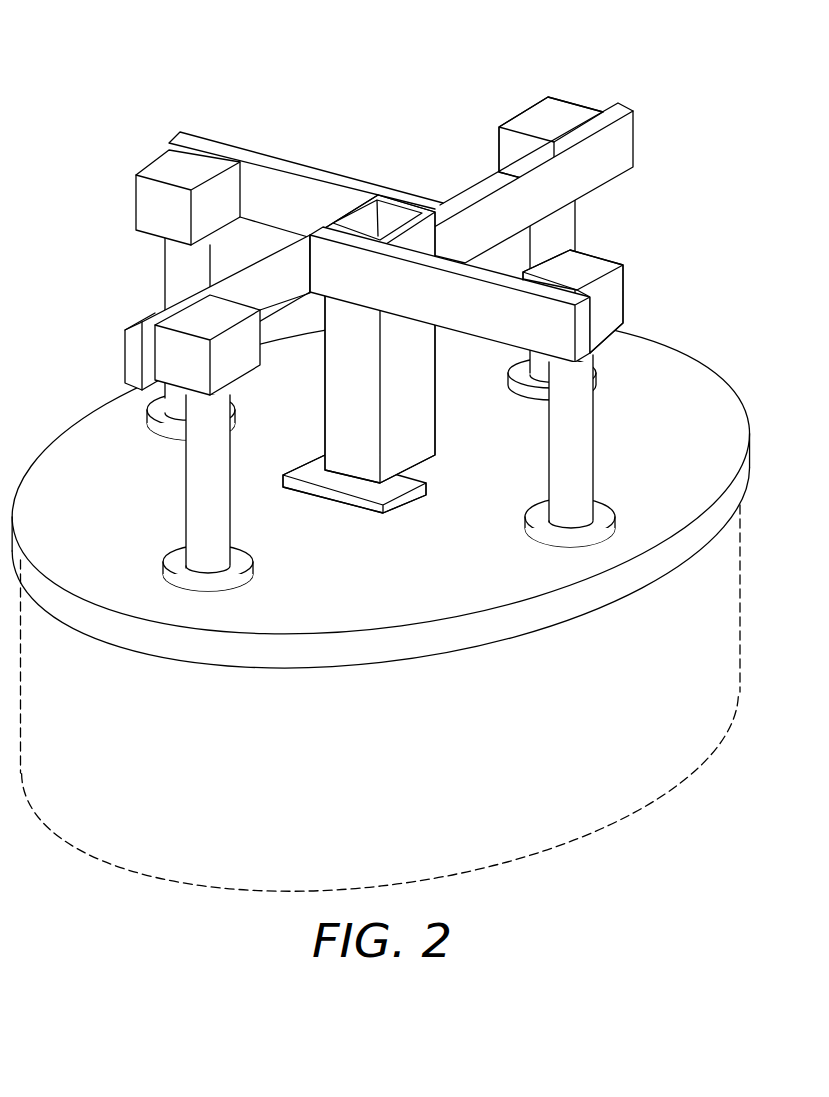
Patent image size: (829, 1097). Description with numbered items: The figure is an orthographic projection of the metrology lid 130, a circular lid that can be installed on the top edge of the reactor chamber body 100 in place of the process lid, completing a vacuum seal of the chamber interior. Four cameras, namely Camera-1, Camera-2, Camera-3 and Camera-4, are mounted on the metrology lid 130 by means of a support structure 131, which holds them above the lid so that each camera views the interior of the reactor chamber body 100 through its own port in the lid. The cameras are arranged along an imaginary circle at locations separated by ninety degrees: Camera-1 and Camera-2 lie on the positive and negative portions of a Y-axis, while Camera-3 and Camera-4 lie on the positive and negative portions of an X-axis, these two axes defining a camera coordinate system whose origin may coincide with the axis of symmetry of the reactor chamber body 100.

The reactor chamber body 100 is at (305, 756).
The metrology lid 130 is at (86, 206).
The support structure 131 is at (332, 213).
The camera 1 Camera-1 is at (177, 274).
The camera 2 Camera-2 is at (580, 424).
The camera 3 Camera-3 is at (566, 228).
The camera 4 Camera-4 is at (200, 496).